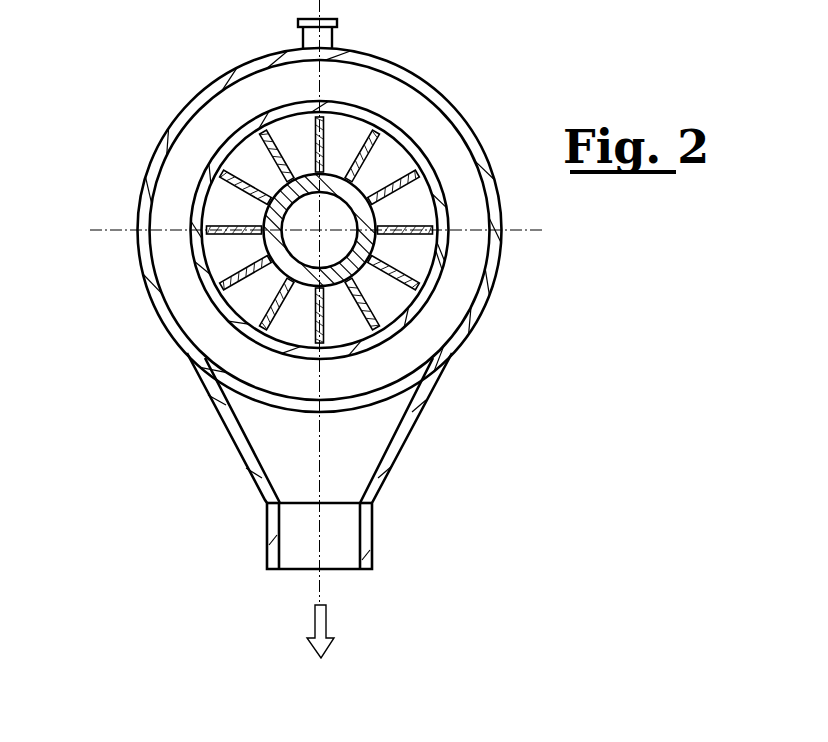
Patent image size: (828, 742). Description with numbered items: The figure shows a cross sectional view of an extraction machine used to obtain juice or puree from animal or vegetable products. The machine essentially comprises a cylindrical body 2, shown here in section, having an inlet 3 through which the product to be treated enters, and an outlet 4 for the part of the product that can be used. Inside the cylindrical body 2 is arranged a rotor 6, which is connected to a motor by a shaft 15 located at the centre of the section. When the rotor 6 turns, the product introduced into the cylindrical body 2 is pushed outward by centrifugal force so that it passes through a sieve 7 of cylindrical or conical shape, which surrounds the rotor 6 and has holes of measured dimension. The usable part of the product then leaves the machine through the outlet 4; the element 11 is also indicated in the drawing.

The cylindrical body 2 is at (197, 110).
The inlet 3 is at (333, 37).
The outlet 4 is at (302, 565).
The rotor 6 is at (222, 282).
The sieve 7 is at (402, 143).
The hub 11 is at (367, 248).
The shaft 15 is at (290, 260).